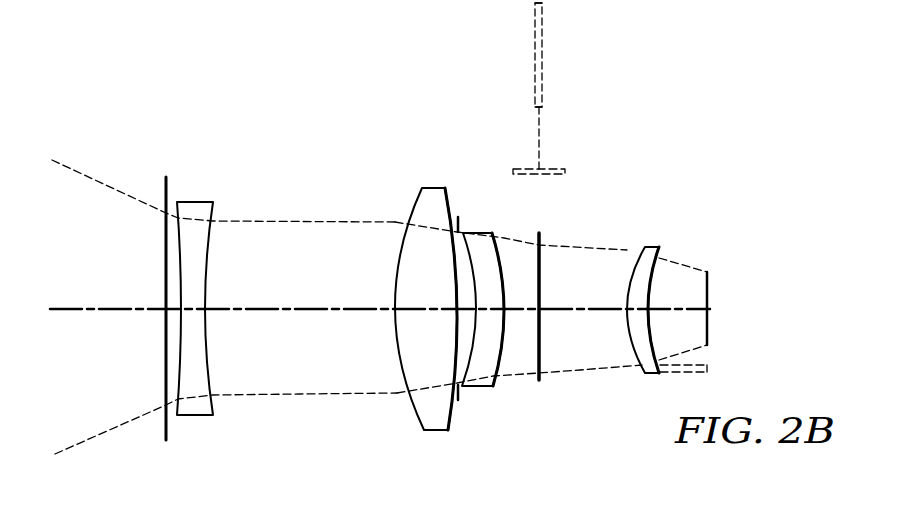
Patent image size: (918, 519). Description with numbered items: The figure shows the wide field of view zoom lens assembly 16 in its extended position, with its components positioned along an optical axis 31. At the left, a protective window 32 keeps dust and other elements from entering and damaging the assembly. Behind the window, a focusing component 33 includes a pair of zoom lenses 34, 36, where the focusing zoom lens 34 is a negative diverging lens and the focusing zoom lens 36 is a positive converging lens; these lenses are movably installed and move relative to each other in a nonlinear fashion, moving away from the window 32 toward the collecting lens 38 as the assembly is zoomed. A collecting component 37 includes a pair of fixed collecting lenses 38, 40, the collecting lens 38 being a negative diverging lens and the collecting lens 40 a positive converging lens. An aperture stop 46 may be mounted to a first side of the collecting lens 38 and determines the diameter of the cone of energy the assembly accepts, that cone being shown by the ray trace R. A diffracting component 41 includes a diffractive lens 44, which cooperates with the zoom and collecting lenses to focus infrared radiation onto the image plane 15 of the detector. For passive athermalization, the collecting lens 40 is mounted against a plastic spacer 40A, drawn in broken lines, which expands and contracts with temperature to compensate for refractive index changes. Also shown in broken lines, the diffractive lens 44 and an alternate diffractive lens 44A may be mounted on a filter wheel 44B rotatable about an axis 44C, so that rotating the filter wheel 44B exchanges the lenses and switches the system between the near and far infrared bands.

The image plane 15 is at (708, 290).
The wide field of view zoom lens assembly 16 is at (282, 148).
The optical axis 31 is at (72, 307).
The protective window 32 is at (166, 440).
The focusing component 33 is at (333, 413).
The focusing zoom lens 34 is at (196, 200).
The focusing zoom lens 36 is at (432, 188).
The collecting component 37 is at (594, 384).
The collecting lens 38 is at (477, 233).
The collecting lens 40 is at (652, 247).
The plastic spacer 40A is at (708, 372).
The diffracting component 41 is at (541, 382).
The diffractive lens 44 is at (542, 283).
The alternate diffractive lens 44A is at (542, 44).
The filter wheel 44B is at (540, 137).
The axis 44C is at (545, 175).
The aperture stop 46 is at (461, 395).
The ray trace R is at (73, 447).